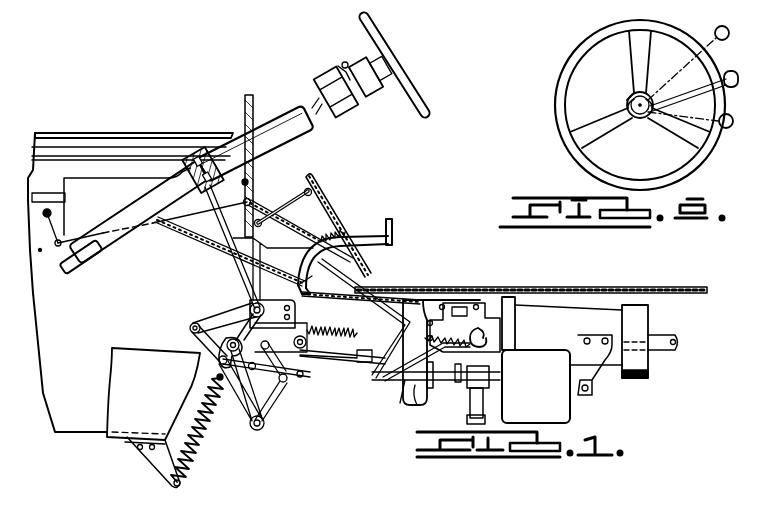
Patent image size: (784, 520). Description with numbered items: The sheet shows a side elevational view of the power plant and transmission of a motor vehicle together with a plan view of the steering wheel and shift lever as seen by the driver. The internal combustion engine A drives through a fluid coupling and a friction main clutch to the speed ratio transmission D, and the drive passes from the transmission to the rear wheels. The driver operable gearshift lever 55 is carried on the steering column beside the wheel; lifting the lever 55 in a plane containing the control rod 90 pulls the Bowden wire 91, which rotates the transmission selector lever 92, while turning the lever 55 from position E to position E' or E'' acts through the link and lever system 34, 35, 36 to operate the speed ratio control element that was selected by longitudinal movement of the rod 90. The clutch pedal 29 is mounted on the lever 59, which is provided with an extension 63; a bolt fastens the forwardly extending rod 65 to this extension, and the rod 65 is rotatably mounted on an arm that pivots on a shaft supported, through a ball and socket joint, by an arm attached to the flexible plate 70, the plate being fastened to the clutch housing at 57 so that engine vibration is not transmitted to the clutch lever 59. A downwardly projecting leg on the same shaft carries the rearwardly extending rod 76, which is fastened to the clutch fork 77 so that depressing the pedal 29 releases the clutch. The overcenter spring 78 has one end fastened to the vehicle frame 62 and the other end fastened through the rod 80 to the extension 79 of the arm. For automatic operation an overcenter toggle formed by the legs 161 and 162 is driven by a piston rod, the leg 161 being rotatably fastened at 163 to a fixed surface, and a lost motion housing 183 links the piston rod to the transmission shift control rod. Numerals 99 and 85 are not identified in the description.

In FIG. 1, the internal combustion engine A is at (85, 135).
In FIG. 1, the control rod 90 is at (278, 118).
In FIG. 1, the gearshift lever 55 is at (350, 56).
In FIG. 1, the Bowden wire 91 is at (214, 240).
In FIG. 1, the link and lever system 34 is at (240, 275).
In FIG. 1, the clutch pedal 29 is at (393, 233).
In FIG. 1, the fastening point on clutch housing 57 is at (332, 292).
In FIG. 1, the lever 59 is at (315, 281).
In FIG. 1, the speed ratio transmission D is at (428, 292).
In FIG. 1, the clutch fork 77 is at (398, 326).
In FIG. 1, the transmission selector lever 92 is at (488, 340).
In FIG. 1, the extension 63 is at (378, 396).
In FIG. 1, the housing 183 is at (400, 403).
In FIG. 1, the link and lever system 36 is at (417, 405).
In FIG. 1, the housing 99 is at (568, 416).
In FIG. 1, the flexible plate 70 is at (270, 302).
In FIG. 1, the extension of arm 79 is at (281, 336).
In FIG. 1, the spring 85 is at (318, 328).
In FIG. 1, the rearwardly extending rod 76 is at (336, 347).
In FIG. 1, the forwardly extending rod 65 is at (322, 362).
In FIG. 1, the rod 80 is at (220, 322).
In FIG. 1, the link and lever system 35 is at (312, 378).
In FIG. 1, the toggle leg 162 is at (286, 382).
In FIG. 1, the toggle leg 161 is at (275, 398).
In FIG. 1, the pivot on fixed surface 163 is at (260, 428).
In FIG. 1, the vehicle frame 62 is at (112, 372).
In FIG. 1, the overcenter spring 78 is at (203, 436).
In FIG. 2, the lever position E'' is at (704, 58).
In FIG. 2, the lever position E is at (706, 90).
In FIG. 2, the lever position E' is at (704, 120).